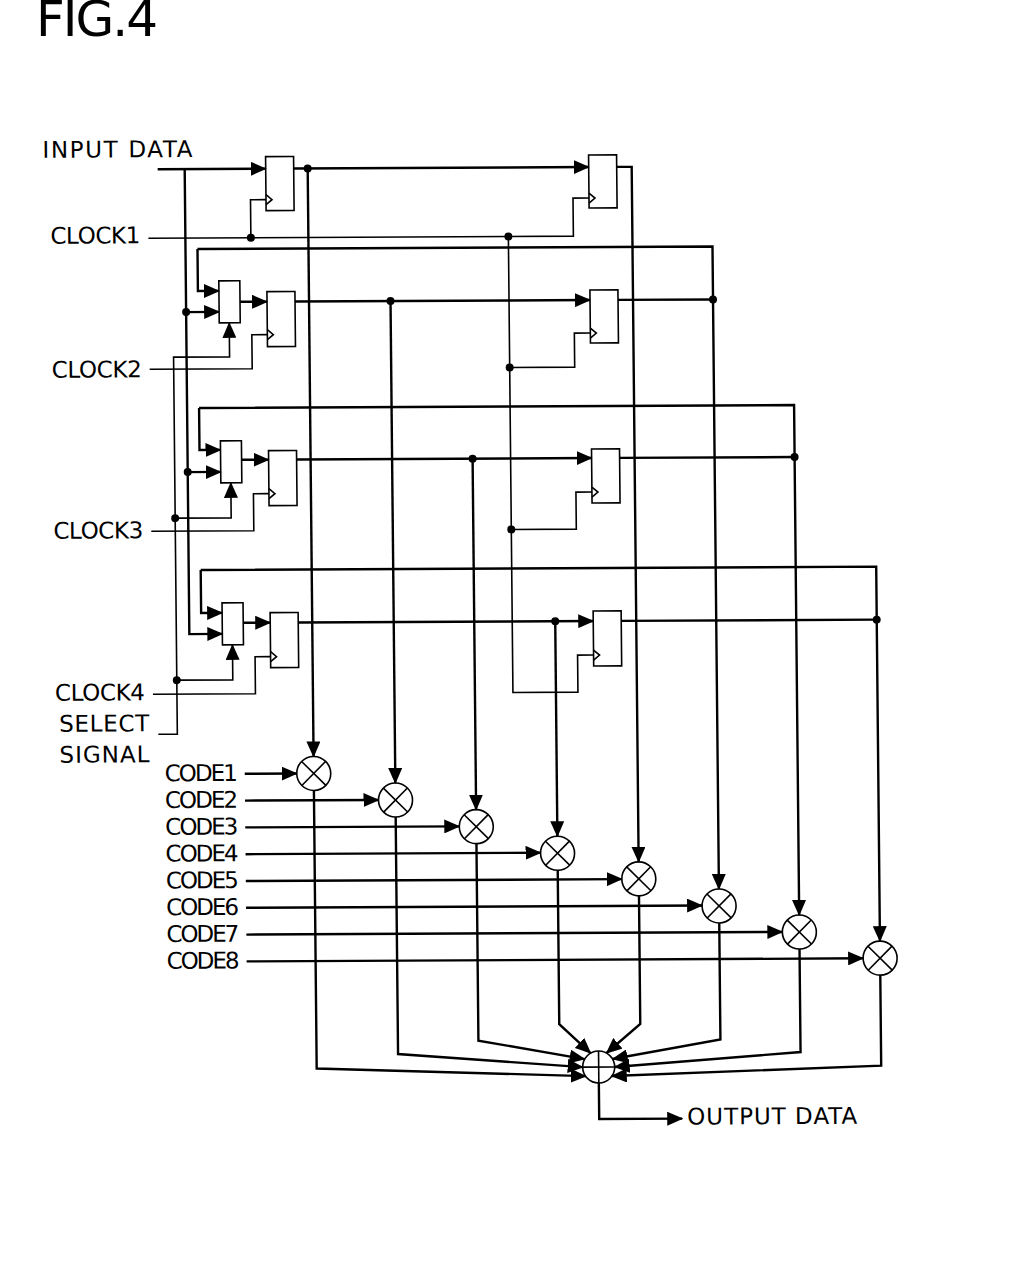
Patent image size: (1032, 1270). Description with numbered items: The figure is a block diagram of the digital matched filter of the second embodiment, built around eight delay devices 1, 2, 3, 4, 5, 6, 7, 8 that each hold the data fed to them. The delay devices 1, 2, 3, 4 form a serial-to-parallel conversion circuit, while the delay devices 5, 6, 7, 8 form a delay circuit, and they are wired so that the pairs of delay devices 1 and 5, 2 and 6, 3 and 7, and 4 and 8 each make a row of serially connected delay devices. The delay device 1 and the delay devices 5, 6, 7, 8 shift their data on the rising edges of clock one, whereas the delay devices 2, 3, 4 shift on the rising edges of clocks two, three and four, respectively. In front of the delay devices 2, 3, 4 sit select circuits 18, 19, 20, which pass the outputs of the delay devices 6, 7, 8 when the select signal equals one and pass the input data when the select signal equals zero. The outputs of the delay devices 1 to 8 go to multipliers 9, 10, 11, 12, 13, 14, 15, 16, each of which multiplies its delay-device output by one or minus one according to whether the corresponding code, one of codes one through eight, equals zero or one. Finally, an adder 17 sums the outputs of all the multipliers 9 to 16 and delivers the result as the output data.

The delay device 1 is at (283, 157).
The delay device 2 is at (279, 292).
The delay device 3 is at (278, 451).
The delay device 4 is at (278, 613).
The delay device 5 is at (605, 157).
The delay device 6 is at (604, 292).
The delay device 7 is at (603, 451).
The delay device 8 is at (603, 613).
The multiplier 9 is at (320, 760).
The multiplier 10 is at (401, 788).
The multiplier 11 is at (482, 815).
The multiplier 12 is at (563, 842).
The multiplier 13 is at (644, 868).
The multiplier 14 is at (724, 896).
The multiplier 15 is at (804, 922).
The multiplier 16 is at (885, 948).
The adder 17 is at (591, 1052).
The select circuit 18 is at (233, 281).
The select circuit 19 is at (232, 441).
The select circuit 20 is at (230, 603).